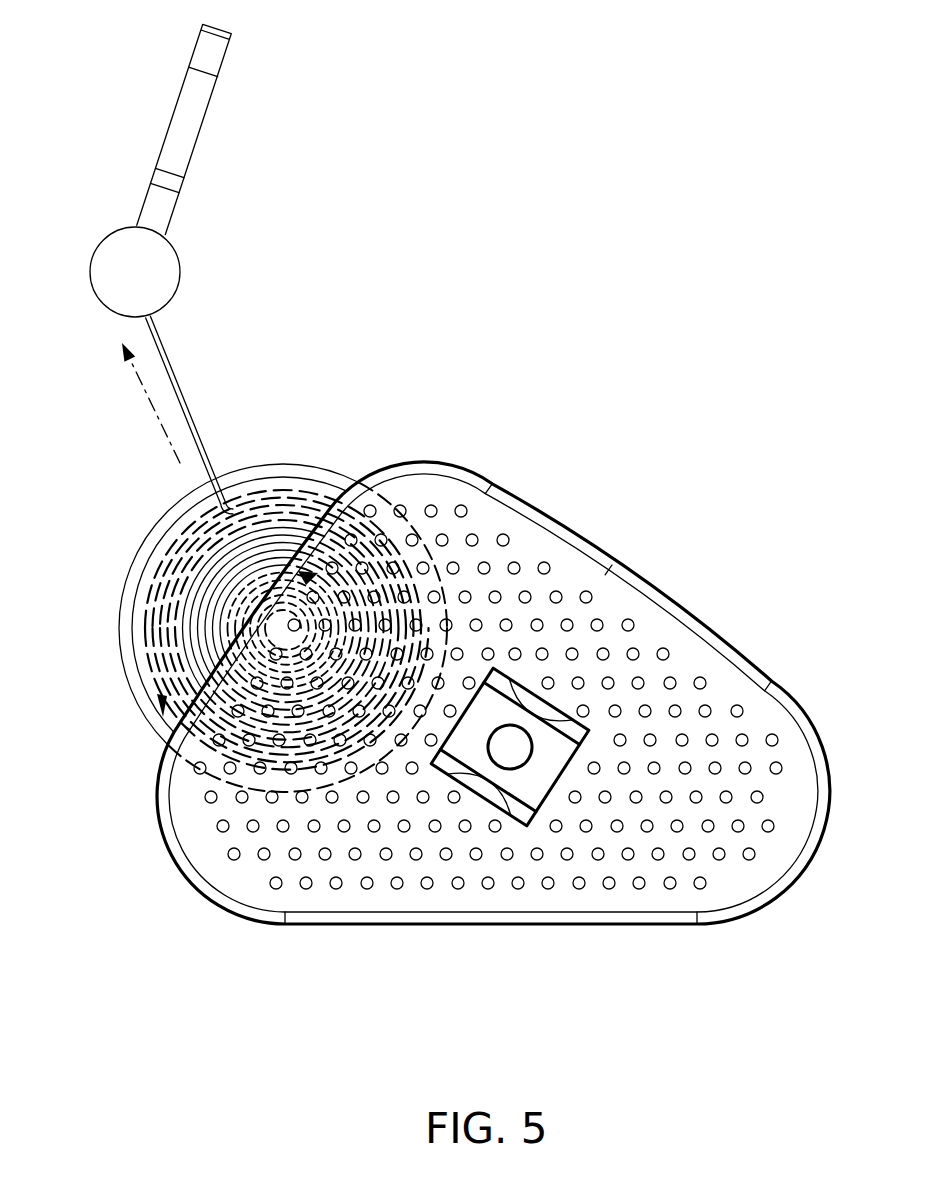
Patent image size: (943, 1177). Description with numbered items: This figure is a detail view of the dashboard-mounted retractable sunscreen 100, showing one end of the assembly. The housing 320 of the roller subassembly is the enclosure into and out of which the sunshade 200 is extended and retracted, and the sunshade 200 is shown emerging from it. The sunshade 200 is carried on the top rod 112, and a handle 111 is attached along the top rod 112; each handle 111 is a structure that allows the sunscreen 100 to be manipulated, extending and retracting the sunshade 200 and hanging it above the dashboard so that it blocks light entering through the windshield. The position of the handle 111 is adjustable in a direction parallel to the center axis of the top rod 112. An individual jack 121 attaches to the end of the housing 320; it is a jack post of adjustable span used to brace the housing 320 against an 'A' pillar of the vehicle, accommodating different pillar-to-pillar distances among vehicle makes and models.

The dashboard-mounted retractable sunscreen 100 is at (667, 273).
The handle 111 is at (193, 143).
The top rod 112 is at (120, 253).
The individual jack 121 is at (613, 564).
The sunshade 200 is at (192, 407).
The housing 320 is at (307, 472).